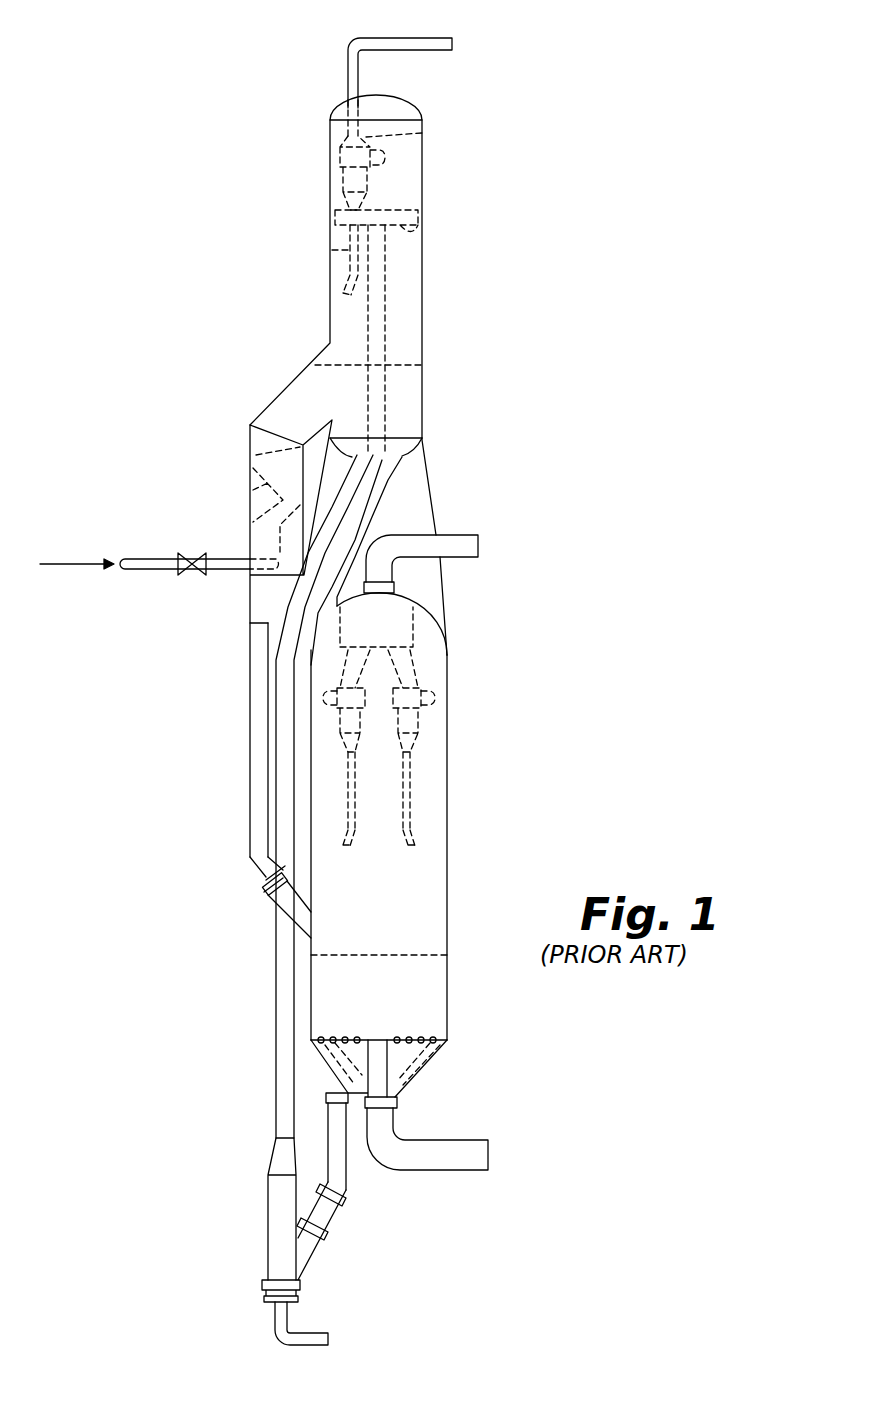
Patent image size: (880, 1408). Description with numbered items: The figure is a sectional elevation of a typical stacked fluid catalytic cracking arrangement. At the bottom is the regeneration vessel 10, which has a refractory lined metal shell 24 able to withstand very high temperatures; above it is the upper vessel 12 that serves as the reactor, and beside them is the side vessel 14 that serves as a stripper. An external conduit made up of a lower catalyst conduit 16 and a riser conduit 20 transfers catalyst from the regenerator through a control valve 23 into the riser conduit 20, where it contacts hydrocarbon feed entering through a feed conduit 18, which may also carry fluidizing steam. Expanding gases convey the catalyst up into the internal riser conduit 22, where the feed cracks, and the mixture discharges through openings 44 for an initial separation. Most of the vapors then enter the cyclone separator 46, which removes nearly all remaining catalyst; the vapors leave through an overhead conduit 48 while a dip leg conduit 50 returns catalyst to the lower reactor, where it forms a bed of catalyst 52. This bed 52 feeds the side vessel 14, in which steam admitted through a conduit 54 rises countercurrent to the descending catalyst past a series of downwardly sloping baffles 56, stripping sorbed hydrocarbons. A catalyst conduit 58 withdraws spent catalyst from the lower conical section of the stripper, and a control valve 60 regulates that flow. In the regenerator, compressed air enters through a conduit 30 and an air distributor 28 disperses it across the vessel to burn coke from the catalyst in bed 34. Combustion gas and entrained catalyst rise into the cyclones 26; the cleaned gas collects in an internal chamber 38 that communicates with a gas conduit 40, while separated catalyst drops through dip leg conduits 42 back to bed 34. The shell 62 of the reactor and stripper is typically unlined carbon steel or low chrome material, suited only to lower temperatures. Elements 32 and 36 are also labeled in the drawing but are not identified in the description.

The regeneration vessel 10 is at (390, 922).
The upper vessel 12 is at (345, 325).
The side vessel 14 is at (270, 478).
The lower catalyst conduit 16 is at (346, 1160).
The feed conduit 18 is at (300, 1335).
The riser conduit 20 is at (268, 1240).
The internal riser conduit 22 is at (385, 300).
The control valve 23 is at (322, 1210).
The refractory lined metal shell 24 is at (306, 997).
The cyclone separators 26 is at (402, 748).
The air distributor 28 is at (343, 1040).
The conduit 30 is at (445, 1140).
The transfer pipe 32 is at (295, 925).
The bed 34 is at (362, 987).
The cyclone separators 36 is at (323, 700).
The internal chamber 38 is at (415, 642).
The gas conduit 40 is at (445, 535).
The dip leg conduits 42 is at (379, 854).
The openings 44 is at (422, 232).
The cyclone separator 46 is at (420, 134).
The overhead conduit 48 is at (436, 38).
The dip leg conduit 50 is at (332, 250).
The bed of catalyst 52 is at (340, 397).
The conduit 54 is at (232, 572).
The downwardly sloping baffles 56 is at (282, 518).
The catalyst conduit 58 is at (252, 795).
The control valve 60 is at (250, 608).
The shell 62 is at (333, 290).